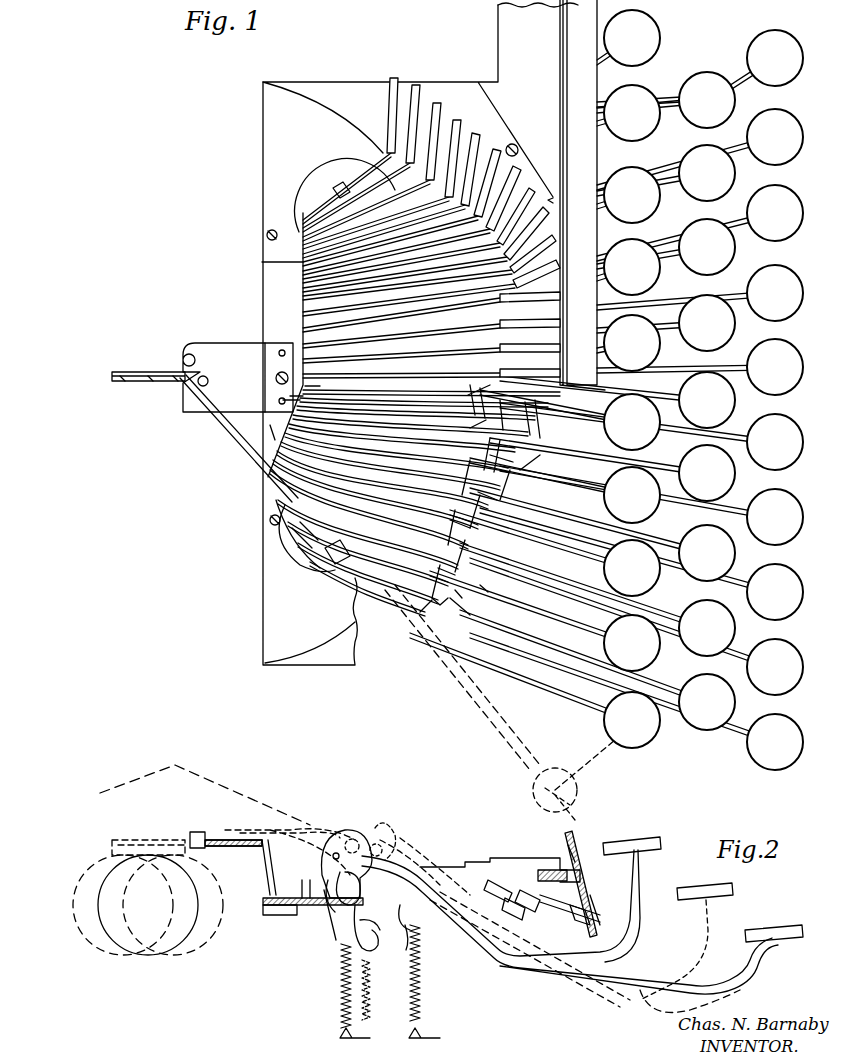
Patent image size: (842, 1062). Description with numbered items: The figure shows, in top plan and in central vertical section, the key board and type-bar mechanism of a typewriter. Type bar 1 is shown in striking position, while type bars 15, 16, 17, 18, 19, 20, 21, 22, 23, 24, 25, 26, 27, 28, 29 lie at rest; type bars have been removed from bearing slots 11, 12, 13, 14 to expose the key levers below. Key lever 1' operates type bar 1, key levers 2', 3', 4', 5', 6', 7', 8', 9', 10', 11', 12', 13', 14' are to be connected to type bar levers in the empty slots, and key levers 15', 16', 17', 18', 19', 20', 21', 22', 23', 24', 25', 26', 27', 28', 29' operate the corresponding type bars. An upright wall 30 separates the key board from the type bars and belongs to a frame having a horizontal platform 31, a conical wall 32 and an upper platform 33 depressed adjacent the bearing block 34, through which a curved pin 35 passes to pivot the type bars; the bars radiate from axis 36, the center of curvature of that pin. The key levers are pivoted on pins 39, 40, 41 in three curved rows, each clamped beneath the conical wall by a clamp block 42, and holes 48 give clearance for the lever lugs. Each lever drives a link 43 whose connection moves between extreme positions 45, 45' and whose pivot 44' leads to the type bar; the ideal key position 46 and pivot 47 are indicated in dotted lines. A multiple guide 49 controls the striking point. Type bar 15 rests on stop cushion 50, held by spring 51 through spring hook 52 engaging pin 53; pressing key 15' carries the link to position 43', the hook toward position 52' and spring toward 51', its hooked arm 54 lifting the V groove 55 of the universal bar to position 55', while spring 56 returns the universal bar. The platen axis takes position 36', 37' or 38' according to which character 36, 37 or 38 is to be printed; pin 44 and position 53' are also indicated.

In FIG. 1, the type bar 1 is at (138, 364).
In FIG. 1, the key lever 1' is at (527, 670).
In FIG. 1, the key lever 2' is at (636, 697).
In FIG. 1, the key lever 3' is at (597, 659).
In FIG. 1, the key lever 4' is at (545, 621).
In FIG. 1, the key lever 5' is at (636, 626).
In FIG. 1, the key lever 6' is at (597, 586).
In FIG. 1, the key lever 7' is at (555, 553).
In FIG. 1, the key lever 8' is at (641, 564).
In FIG. 1, the key lever 9' is at (602, 526).
In FIG. 1, the key lever 10' is at (542, 490).
In FIG. 1, the key lever 11' is at (651, 504).
In FIG. 1, the key lever 12' is at (612, 469).
In FIG. 1, the key lever 13' is at (651, 436).
In FIG. 1, the key lever 14' is at (542, 415).
In FIG. 1, the key lever 15' is at (617, 400).
In FIG. 2, the key lever 15' is at (686, 931).
In FIG. 1, the key lever 16' is at (700, 367).
In FIG. 2, the key lever 16' is at (774, 923).
In FIG. 1, the key lever 17' is at (628, 343).
In FIG. 2, the key lever 17' is at (632, 837).
In FIG. 1, the key lever 18' is at (666, 323).
In FIG. 1, the key lever 19' is at (700, 293).
In FIG. 1, the key lever 20' is at (628, 267).
In FIG. 1, the key lever 21' is at (666, 247).
In FIG. 1, the key lever 22' is at (700, 223).
In FIG. 1, the key lever 23' is at (628, 195).
In FIG. 1, the key lever 24' is at (666, 173).
In FIG. 1, the key lever 25' is at (700, 149).
In FIG. 1, the key lever 26' is at (628, 113).
In FIG. 1, the key lever 27' is at (666, 100).
In FIG. 1, the key lever 28' is at (700, 68).
In FIG. 1, the key lever 29' is at (628, 38).
In FIG. 1, the bearing slot 11 is at (274, 403).
In FIG. 1, the bearing slot 12 is at (287, 396).
In FIG. 1, the bearing slot 13 is at (267, 377).
In FIG. 1, the bearing slot 14 is at (306, 385).
In FIG. 1, the type bar 15 is at (443, 374).
In FIG. 2, the type bar 15 is at (500, 858).
In FIG. 1, the type bar 16 is at (443, 352).
In FIG. 1, the type bar 17 is at (443, 332).
In FIG. 1, the type bar 18 is at (443, 311).
In FIG. 1, the type bar 19 is at (431, 288).
In FIG. 1, the type bar 20 is at (429, 267).
In FIG. 1, the type bar 21 is at (426, 249).
In FIG. 1, the type bar 22 is at (423, 235).
In FIG. 1, the type bar 23 is at (420, 220).
In FIG. 1, the type bar 24 is at (402, 197).
In FIG. 1, the type bar 25 is at (399, 186).
In FIG. 1, the type bar 26 is at (390, 174).
In FIG. 1, the type bar 27 is at (381, 162).
In FIG. 1, the type bar 28 is at (375, 150).
In FIG. 1, the type bar 29 is at (361, 143).
In FIG. 1, the upright wall 30 is at (582, 195).
In FIG. 2, the upright wall 30 is at (580, 870).
In FIG. 1, the horizontal platform 31 is at (538, 30).
In FIG. 1, the conical wall 32 is at (408, 286).
In FIG. 2, the conical wall 32 is at (582, 910).
In FIG. 1, the upper platform 33 is at (310, 373).
In FIG. 2, the upper platform 33 is at (271, 921).
In FIG. 1, the bearing block 34 is at (262, 262).
In FIG. 2, the bearing block 34 is at (302, 885).
In FIG. 1, the curved pin 35 is at (272, 512).
In FIG. 2, the curved pin 35 is at (330, 840).
In FIG. 1, the axis 36 is at (168, 395).
In FIG. 2, the axis 36 is at (213, 834).
In FIG. 1, the character 37 is at (140, 395).
In FIG. 2, the character 37 is at (151, 831).
In FIG. 1, the character 38 is at (107, 395).
In FIG. 2, the character 38 is at (132, 833).
In FIG. 2, the platen axis position 36' is at (173, 905).
In FIG. 2, the platen axis position 37' is at (148, 905).
In FIG. 2, the platen axis position 38' is at (123, 905).
In FIG. 1, the pivot pin 39 is at (442, 615).
In FIG. 2, the pivot pin 39 is at (512, 888).
In FIG. 1, the pivot pin 40 is at (460, 608).
In FIG. 2, the pivot pin 40 is at (536, 899).
In FIG. 1, the pivot pin 41 is at (490, 600).
In FIG. 2, the pivot pin 41 is at (560, 905).
In FIG. 2, the clamp block 42 is at (539, 920).
In FIG. 1, the link 43 is at (298, 538).
In FIG. 2, the link 43 is at (319, 920).
In FIG. 2, the link position 43' is at (365, 827).
In FIG. 2, the space lever 44 is at (312, 883).
In FIG. 1, the pivot pin 44' is at (239, 460).
In FIG. 2, the pivot pin 44' is at (337, 824).
In FIG. 2, the connection position 45 is at (349, 897).
In FIG. 1, the connection position 45' is at (294, 552).
In FIG. 2, the connection position 45' is at (392, 827).
In FIG. 1, the dotted line key position 46 is at (574, 776).
In FIG. 2, the dotted line key position 46 is at (554, 803).
In FIG. 1, the key-lever pivot position 47 is at (410, 620).
In FIG. 1, the hole 48 is at (540, 170).
In FIG. 1, the multiple guide 49 is at (238, 377).
In FIG. 2, the stop cushion 50 is at (572, 850).
In FIG. 2, the spring 51 is at (339, 991).
In FIG. 2, the spring position 51' is at (377, 990).
In FIG. 2, the spring hook 52 is at (377, 934).
In FIG. 2, the spring hook position 52' is at (435, 865).
In FIG. 2, the pivot pin 53 is at (337, 910).
In FIG. 2, the arm position 53' is at (410, 855).
In FIG. 2, the hooked arm 54 is at (372, 950).
In FIG. 1, the V groove 55 is at (327, 387).
In FIG. 2, the V groove 55 is at (400, 929).
In FIG. 2, the universal bar position 55' is at (426, 937).
In FIG. 2, the spring 56 is at (425, 985).